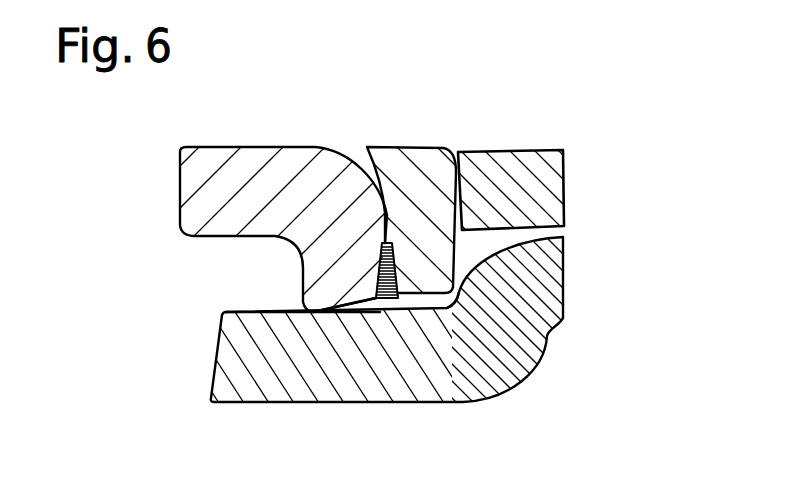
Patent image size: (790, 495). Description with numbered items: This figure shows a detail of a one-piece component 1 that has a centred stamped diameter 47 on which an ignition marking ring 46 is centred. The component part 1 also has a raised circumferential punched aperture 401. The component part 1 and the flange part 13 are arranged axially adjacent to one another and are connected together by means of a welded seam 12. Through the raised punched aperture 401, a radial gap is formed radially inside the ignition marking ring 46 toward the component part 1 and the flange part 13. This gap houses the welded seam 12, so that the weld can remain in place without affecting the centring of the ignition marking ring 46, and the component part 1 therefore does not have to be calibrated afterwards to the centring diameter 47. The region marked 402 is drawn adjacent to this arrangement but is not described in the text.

The one-piece component 1 is at (228, 218).
The welded seam 12 is at (390, 303).
The flange part 13 is at (418, 177).
The ignition marking ring 46 is at (553, 190).
The centred stamped diameter 47 is at (315, 312).
The raised circumferential punched aperture 401 is at (360, 297).
The shoulder 402 is at (450, 310).